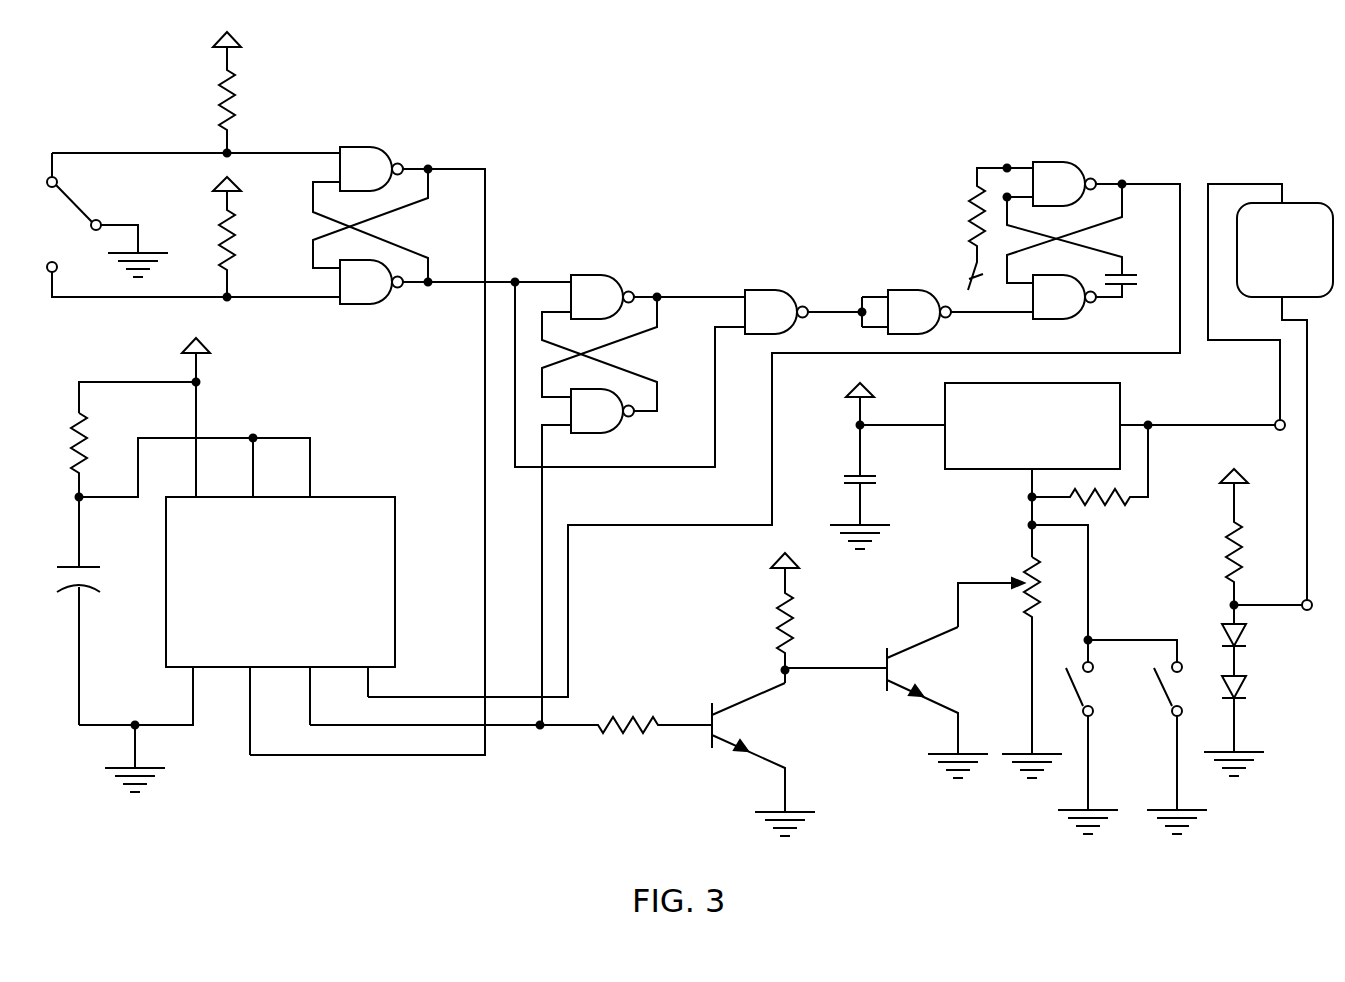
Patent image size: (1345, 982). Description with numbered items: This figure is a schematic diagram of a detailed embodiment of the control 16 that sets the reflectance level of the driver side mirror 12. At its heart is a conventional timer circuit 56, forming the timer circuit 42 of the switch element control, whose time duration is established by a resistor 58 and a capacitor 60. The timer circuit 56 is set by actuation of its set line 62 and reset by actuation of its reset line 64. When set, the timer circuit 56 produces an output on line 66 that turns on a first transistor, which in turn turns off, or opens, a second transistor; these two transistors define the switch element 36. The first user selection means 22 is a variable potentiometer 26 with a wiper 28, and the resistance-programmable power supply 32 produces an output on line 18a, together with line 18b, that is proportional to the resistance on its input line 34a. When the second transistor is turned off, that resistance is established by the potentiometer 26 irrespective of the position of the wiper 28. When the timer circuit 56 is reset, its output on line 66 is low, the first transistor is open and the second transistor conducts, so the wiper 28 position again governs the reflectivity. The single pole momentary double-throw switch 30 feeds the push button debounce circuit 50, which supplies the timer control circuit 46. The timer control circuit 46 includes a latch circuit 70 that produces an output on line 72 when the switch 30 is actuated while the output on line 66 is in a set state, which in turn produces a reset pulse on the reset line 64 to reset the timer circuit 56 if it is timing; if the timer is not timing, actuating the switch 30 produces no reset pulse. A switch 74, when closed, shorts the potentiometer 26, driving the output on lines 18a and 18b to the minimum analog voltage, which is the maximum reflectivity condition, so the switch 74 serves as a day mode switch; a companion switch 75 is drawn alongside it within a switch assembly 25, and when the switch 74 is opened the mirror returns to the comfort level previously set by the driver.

The driver side mirror 12 is at (1266, 297).
The control 16 is at (682, 618).
The output line 18a is at (1226, 422).
The output line 18b is at (1270, 604).
The first user selection means 22 is at (1018, 600).
The switch assembly 25 is at (1139, 676).
The variable potentiometer 26 is at (1040, 592).
The wiper 28 is at (968, 583).
The single pole momentary double-throw switch 30 is at (78, 203).
The resistance-programmable power supply 32 is at (1120, 392).
The input line 34a is at (1032, 477).
The switch element 36 is at (884, 629).
The timer circuit 42 is at (449, 592).
The timer control circuit 46 is at (690, 447).
The push button debounce circuit 50 is at (437, 134).
The timer circuit 56 is at (397, 538).
The resistor 58 is at (72, 441).
The capacitor 60 is at (72, 576).
The set line 62 is at (355, 756).
The reset line 64 is at (1080, 353).
The output line 66 is at (552, 727).
The latch circuit 70 is at (590, 275).
The output line 72 is at (838, 308).
The switch 74 is at (1082, 685).
The switch 75 is at (1163, 683).